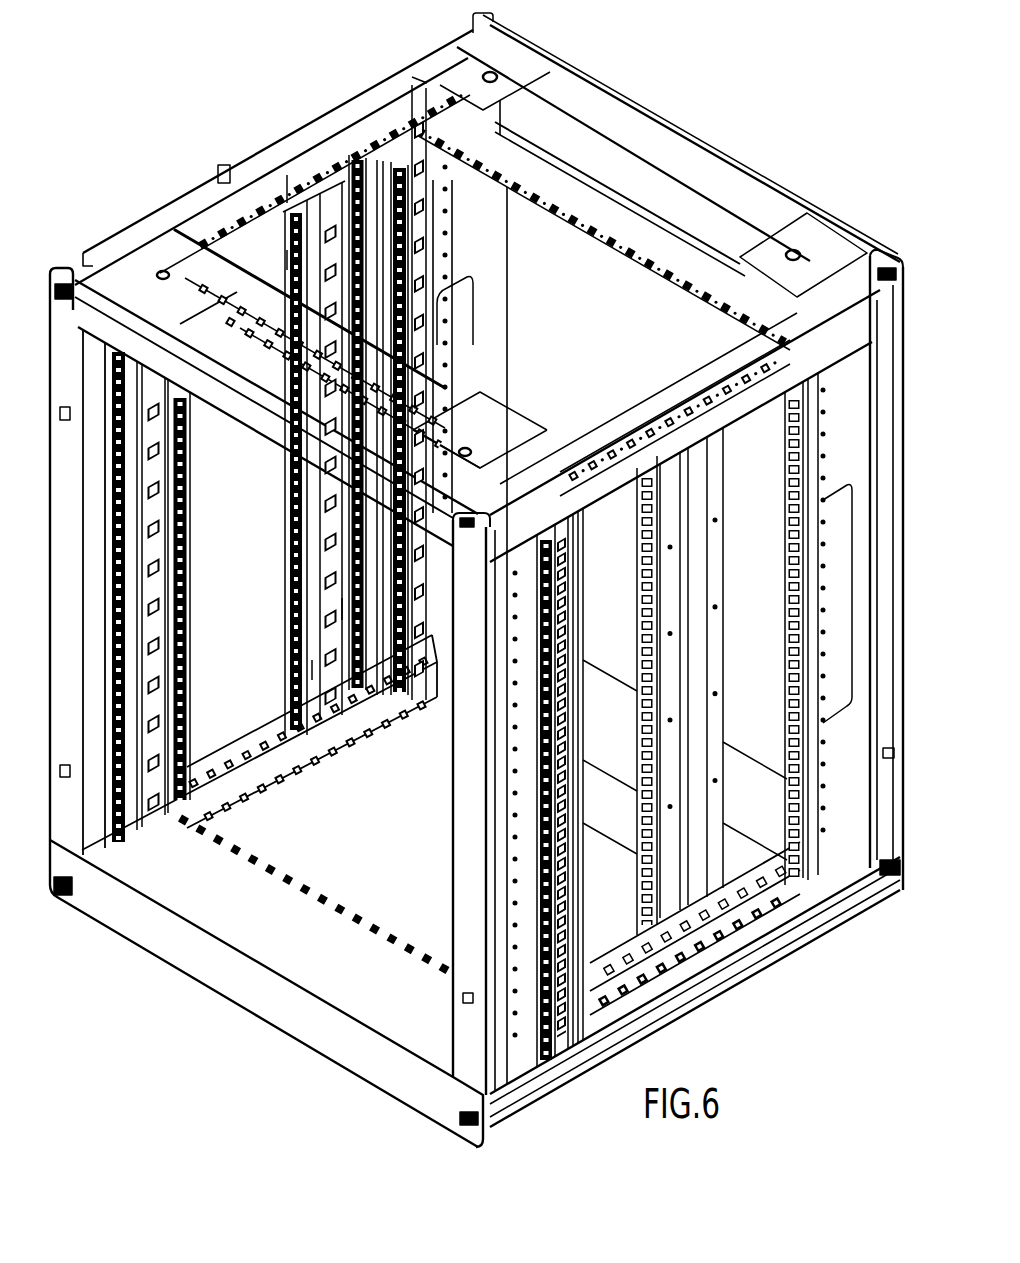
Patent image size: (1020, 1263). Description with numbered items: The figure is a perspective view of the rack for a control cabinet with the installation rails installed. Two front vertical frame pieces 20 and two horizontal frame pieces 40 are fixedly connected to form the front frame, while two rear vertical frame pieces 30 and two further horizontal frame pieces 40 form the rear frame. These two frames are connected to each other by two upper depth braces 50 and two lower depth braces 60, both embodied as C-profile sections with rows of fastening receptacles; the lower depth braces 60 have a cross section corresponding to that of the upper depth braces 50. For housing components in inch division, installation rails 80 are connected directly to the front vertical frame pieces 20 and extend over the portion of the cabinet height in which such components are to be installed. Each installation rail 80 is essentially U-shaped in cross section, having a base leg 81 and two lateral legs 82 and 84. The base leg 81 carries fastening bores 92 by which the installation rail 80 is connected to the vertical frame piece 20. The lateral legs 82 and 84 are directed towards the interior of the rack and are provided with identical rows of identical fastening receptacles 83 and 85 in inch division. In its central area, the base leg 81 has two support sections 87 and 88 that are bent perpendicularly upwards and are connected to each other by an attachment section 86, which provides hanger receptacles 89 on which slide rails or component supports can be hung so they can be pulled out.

The front vertical frame piece 20 is at (73, 322).
The rear vertical frame piece 30 is at (497, 333).
The horizontal frame piece 40 is at (660, 143).
The upper depth brace 50 is at (285, 147).
The lower depth brace 60 is at (307, 780).
The installation rail 80 is at (150, 548).
The base leg 81 is at (287, 173).
The lateral leg 82 is at (218, 163).
The fastening receptacles 83 is at (286, 262).
The lateral leg 84 is at (360, 187).
The fastening receptacles 85 is at (360, 240).
The attachment section 86 is at (330, 600).
The support section 87 is at (312, 668).
The support section 88 is at (333, 137).
The hanger receptacles 89 is at (330, 540).
The fastening bores 92 is at (668, 636).